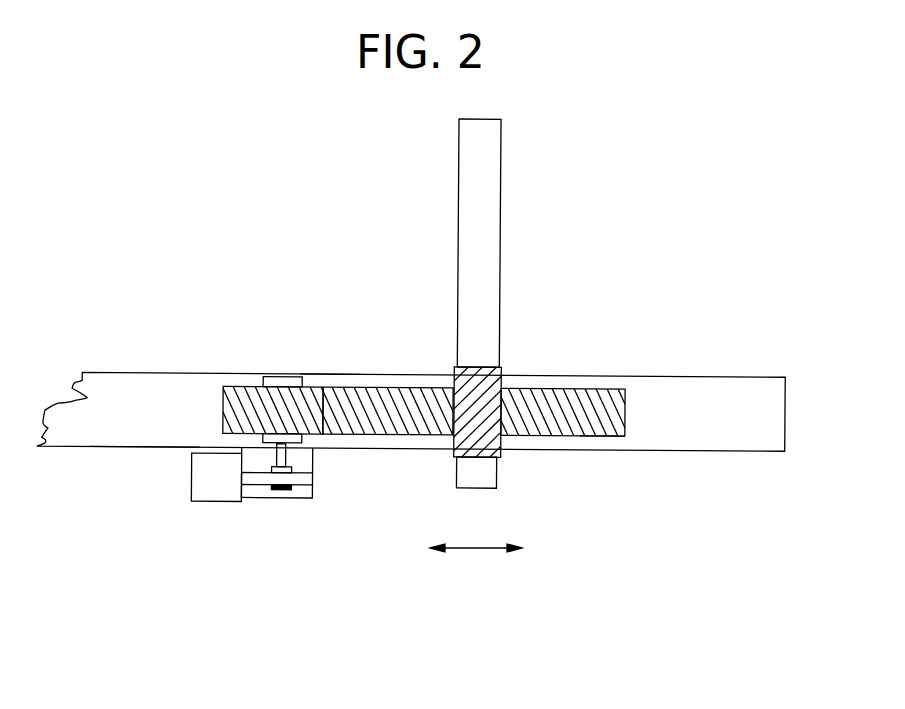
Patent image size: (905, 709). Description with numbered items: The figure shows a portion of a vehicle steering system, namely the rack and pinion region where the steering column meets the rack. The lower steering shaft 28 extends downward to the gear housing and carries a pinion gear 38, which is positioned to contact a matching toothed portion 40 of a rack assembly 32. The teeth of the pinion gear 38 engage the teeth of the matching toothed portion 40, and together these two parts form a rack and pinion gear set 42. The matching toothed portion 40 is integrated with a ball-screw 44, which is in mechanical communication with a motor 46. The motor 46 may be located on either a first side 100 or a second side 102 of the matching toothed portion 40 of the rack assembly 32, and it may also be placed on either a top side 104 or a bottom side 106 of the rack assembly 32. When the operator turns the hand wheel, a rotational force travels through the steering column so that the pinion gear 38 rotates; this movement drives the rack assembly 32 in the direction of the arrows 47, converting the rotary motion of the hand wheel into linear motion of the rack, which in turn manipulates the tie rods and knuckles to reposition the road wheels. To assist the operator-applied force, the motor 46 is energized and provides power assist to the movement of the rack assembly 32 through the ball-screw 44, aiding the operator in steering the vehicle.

The lower steering shaft 28 is at (500, 191).
The rack assembly 32 is at (742, 377).
The pinion gear 38 is at (483, 438).
The matching toothed portion 40 is at (573, 400).
The rack and pinion gear set 42 is at (300, 251).
The ball-screw 44 is at (236, 386).
The motor 46 is at (216, 490).
The arrows 47 is at (478, 549).
The first side 100 is at (337, 440).
The second side 102 is at (612, 438).
The top side 104 is at (331, 373).
The bottom side 106 is at (120, 450).